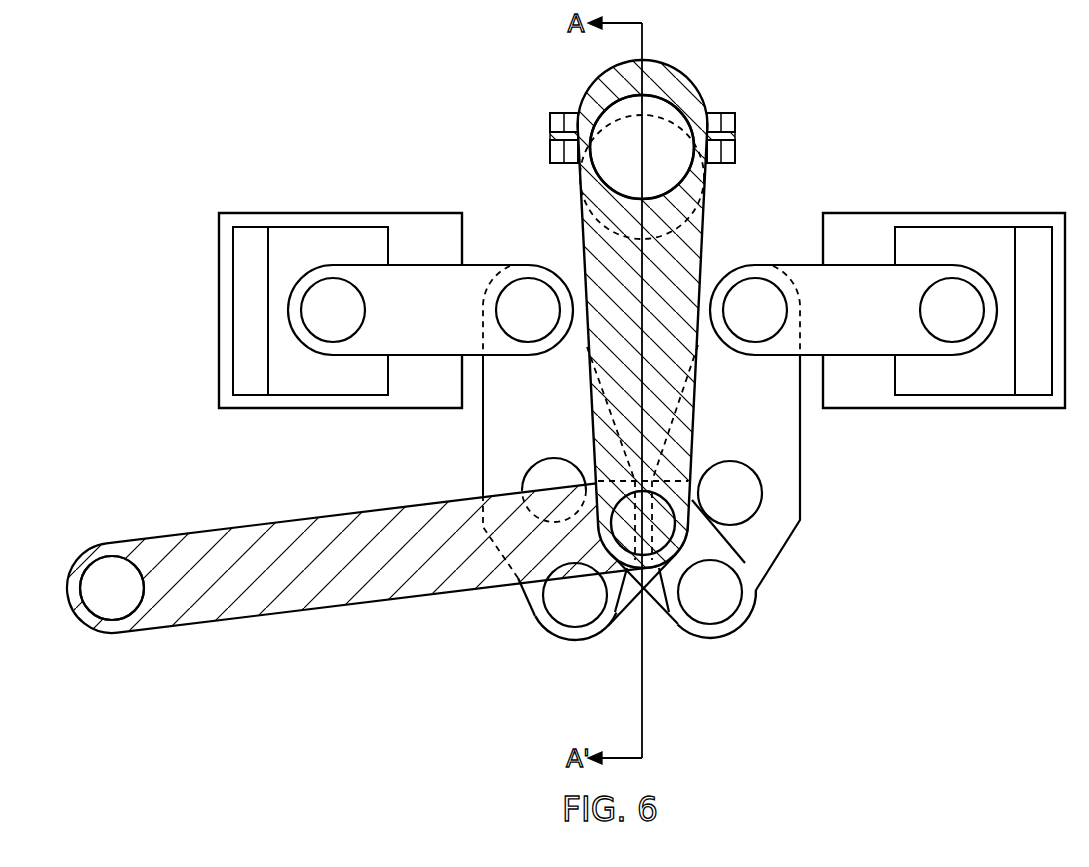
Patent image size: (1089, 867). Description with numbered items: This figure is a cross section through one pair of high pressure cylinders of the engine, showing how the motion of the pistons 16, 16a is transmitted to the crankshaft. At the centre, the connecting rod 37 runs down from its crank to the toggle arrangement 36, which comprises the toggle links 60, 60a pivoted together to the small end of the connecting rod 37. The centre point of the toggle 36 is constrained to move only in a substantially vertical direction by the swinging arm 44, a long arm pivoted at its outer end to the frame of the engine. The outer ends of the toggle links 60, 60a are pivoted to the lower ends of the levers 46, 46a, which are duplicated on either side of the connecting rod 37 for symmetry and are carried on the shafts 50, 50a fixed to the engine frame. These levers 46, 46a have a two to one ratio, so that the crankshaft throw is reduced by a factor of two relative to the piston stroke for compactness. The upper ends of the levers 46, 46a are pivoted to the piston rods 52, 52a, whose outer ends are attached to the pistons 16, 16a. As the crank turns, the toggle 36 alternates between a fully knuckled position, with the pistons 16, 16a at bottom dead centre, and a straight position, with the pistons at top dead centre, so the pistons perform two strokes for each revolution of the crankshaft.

The piston 16 is at (318, 232).
The piston 16a is at (955, 232).
The toggle arrangement 36 is at (645, 620).
The connecting rod 37 is at (703, 228).
The swinging arm 44 is at (385, 578).
The lever 46 is at (487, 412).
The lever 46a is at (797, 462).
The shaft 50 is at (533, 487).
The shaft 50a is at (750, 497).
The piston rod 52 is at (485, 270).
The piston rod 52a is at (806, 264).
The toggle link 60 is at (537, 622).
The toggle link 60a is at (755, 620).